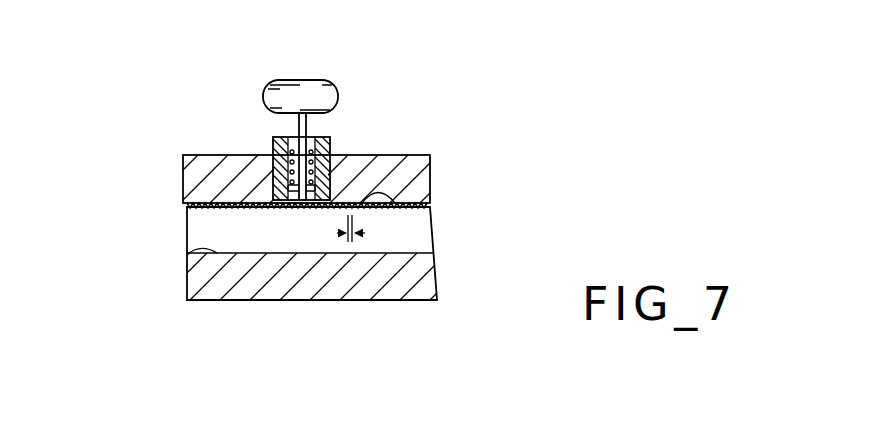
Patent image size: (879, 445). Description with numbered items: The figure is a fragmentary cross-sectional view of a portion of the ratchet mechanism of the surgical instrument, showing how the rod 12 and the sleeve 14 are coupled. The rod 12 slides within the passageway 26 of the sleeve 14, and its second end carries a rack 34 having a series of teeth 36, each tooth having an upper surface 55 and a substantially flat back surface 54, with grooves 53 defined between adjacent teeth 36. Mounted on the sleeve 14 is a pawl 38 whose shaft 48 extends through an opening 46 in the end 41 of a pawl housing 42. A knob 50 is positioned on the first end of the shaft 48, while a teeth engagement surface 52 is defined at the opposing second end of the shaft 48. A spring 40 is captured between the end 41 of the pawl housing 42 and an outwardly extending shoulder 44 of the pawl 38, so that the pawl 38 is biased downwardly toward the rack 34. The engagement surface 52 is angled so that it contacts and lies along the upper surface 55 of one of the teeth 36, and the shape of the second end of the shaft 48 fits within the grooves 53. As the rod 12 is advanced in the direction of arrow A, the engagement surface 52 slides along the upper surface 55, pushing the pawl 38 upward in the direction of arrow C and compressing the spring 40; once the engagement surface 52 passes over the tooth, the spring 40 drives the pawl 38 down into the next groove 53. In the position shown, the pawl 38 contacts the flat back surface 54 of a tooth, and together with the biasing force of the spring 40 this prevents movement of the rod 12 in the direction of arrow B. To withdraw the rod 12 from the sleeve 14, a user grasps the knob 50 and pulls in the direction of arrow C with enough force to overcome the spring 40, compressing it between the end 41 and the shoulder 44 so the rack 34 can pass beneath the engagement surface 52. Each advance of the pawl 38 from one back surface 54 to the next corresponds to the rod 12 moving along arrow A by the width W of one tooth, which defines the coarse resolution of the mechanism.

The pawl 38 is at (218, 80).
The knob 50 is at (310, 82).
The shaft 48 is at (298, 121).
The pawl housing 42 is at (337, 132).
The opening 46 is at (330, 137).
The end of pawl housing 41 is at (275, 137).
The spring 40 is at (420, 163).
The rack 34 is at (413, 202).
The upper surface 55 is at (212, 205).
The teeth 36 is at (192, 203).
The back surface 54 is at (213, 207).
The rod 12 is at (197, 233).
The passageway 26 is at (205, 249).
The grooves 53 is at (248, 207).
The teeth engagement surface 52 is at (280, 207).
The shoulder 44 is at (312, 207).
The sleeve 14 is at (355, 290).
The width W is at (350, 236).
The arrow A is at (92, 197).
The arrow B is at (20, 224).
The arrow C is at (108, 132).